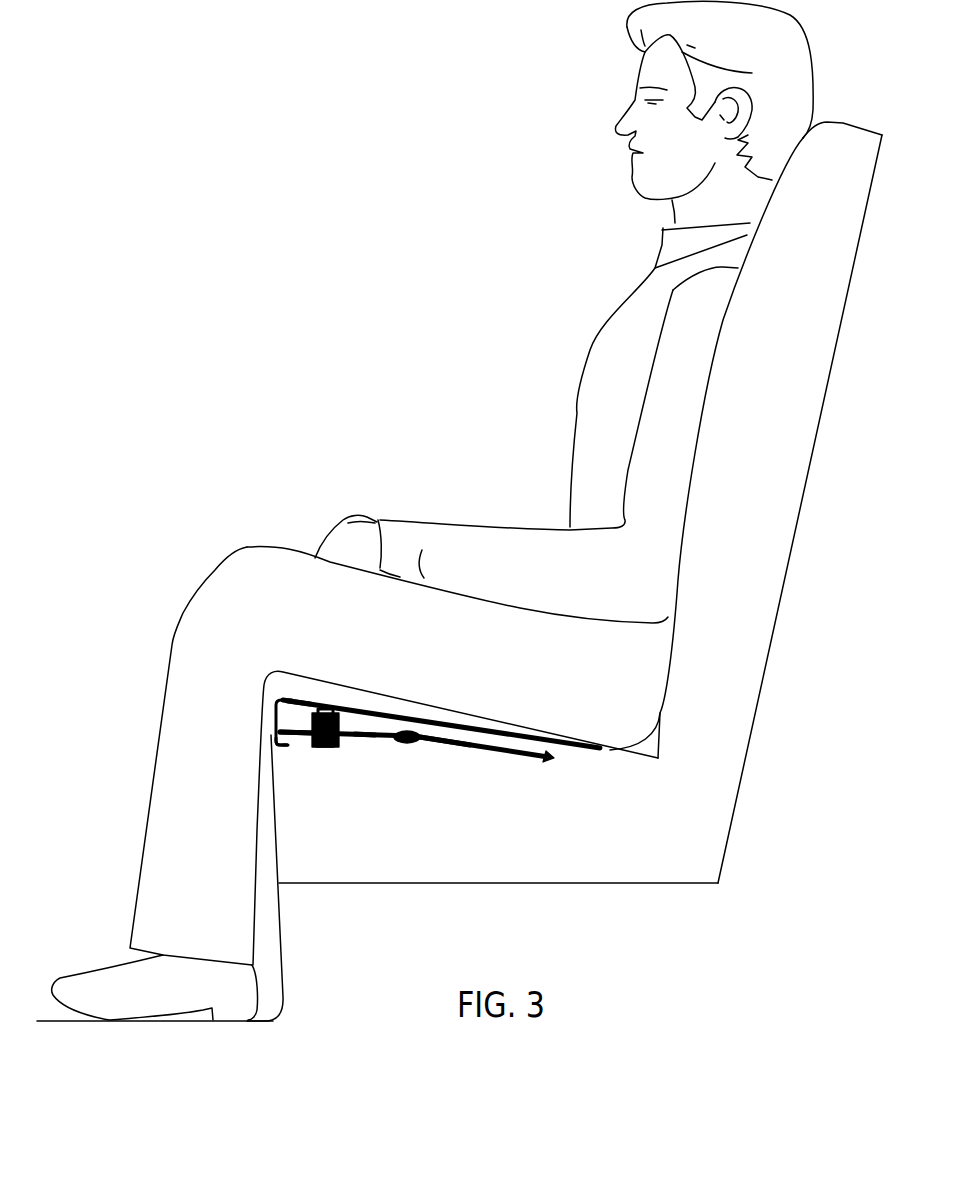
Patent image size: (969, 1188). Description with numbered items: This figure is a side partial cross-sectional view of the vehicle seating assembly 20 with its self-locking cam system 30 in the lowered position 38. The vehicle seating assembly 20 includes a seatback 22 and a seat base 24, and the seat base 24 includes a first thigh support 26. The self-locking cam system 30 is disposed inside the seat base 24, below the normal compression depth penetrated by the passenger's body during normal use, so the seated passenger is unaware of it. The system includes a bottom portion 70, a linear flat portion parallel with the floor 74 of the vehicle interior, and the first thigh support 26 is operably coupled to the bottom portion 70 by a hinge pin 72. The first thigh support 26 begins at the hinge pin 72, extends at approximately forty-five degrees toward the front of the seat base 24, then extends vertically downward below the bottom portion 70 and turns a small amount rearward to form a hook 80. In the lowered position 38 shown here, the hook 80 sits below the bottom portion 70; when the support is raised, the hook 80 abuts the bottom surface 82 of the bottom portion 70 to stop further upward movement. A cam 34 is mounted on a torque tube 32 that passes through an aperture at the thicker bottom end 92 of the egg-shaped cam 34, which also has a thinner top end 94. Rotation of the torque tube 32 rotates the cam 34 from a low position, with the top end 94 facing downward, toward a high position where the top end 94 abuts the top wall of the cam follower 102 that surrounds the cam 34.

The vehicle seating assembly 20 is at (573, 559).
The seatback 22 is at (812, 450).
The seat base 24 is at (312, 775).
The first thigh support 26 is at (380, 726).
The self-locking cam system 30 is at (433, 752).
The torque tube 32 is at (342, 715).
The cam 34 is at (333, 748).
The lowered position 38 is at (291, 746).
The bottom portion 70 is at (394, 743).
The hinge pin 72 is at (414, 744).
The floor 74 is at (191, 1022).
The hook 80 is at (288, 745).
The bottom surface 82 is at (365, 739).
The bottom end 92 is at (304, 724).
The top end 94 is at (323, 748).
The cam follower 102 is at (266, 710).